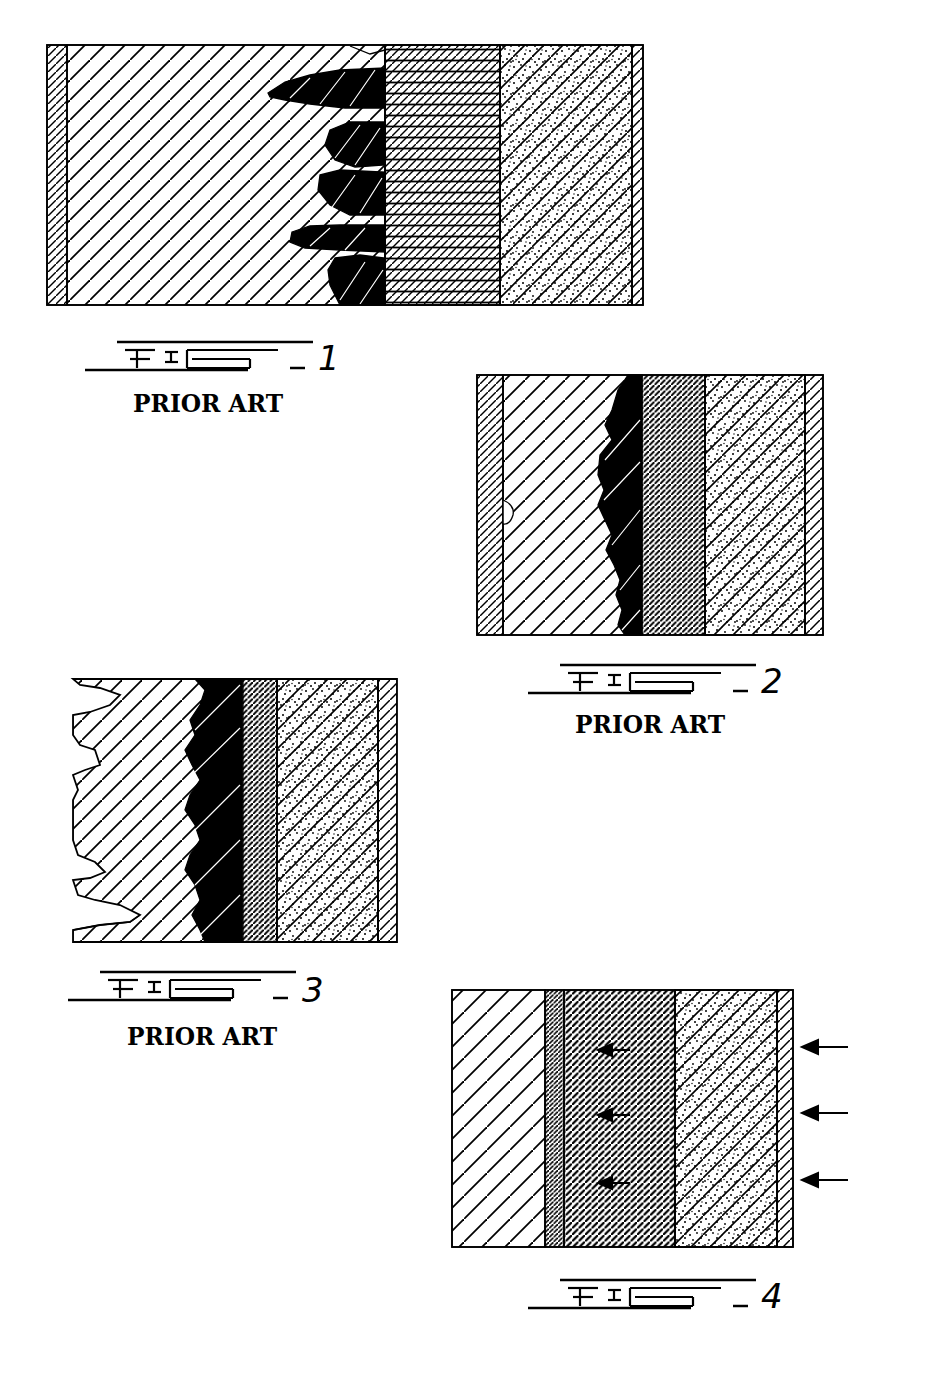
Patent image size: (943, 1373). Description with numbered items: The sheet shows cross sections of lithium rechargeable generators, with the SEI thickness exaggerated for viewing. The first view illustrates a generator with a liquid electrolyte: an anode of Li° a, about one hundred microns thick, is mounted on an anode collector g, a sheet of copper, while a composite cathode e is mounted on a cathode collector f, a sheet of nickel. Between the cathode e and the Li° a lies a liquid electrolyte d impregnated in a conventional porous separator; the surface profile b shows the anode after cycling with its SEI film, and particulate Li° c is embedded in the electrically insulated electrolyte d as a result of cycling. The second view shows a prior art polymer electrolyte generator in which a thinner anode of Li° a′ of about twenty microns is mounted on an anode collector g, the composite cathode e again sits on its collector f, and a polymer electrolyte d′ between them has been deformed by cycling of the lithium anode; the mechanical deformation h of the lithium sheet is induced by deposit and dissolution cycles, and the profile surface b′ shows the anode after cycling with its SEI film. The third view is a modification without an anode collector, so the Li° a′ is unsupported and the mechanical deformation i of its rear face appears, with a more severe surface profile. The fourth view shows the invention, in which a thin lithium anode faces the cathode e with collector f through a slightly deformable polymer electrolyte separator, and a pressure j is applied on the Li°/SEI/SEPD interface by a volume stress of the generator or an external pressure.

In FIG. 1, the anode of Li° a is at (237, 245).
In FIG. 1, the surface profile of the anode after cycling with its film SEI b is at (300, 78).
In FIG. 1, the particulate Li° embedded in electrically insulated electrolyte c is at (371, 50).
In FIG. 1, the liquid electrolyte d is at (455, 220).
In FIG. 1, the composite cathode e is at (540, 230).
In FIG. 2, the composite cathode e is at (750, 400).
In FIG. 3, the composite cathode e is at (338, 900).
In FIG. 4, the composite cathode e is at (730, 1012).
In FIG. 1, the cathode collector f is at (640, 220).
In FIG. 2, the cathode collector f is at (816, 615).
In FIG. 3, the cathode collector f is at (388, 900).
In FIG. 4, the cathode collector f is at (790, 1240).
In FIG. 1, the anode collector g is at (63, 303).
In FIG. 2, the anode collector g is at (489, 615).
In FIG. 2, the anode of Li° a′ is at (531, 600).
In FIG. 3, the anode of Li° a′ is at (140, 710).
In FIG. 2, the profile surface of the anode after cycling with its film SEI b′ is at (642, 380).
In FIG. 2, the polymer electrolyte d′ is at (680, 382).
In FIG. 3, the polymer electrolyte d′ is at (255, 700).
In FIG. 2, the mechanical deformation of the sheet of Li° h is at (500, 524).
In FIG. 3, the mechanical deformation of the rear face of the sheet of Li° i is at (88, 935).
In FIG. 4, the pressure j is at (634, 1046).